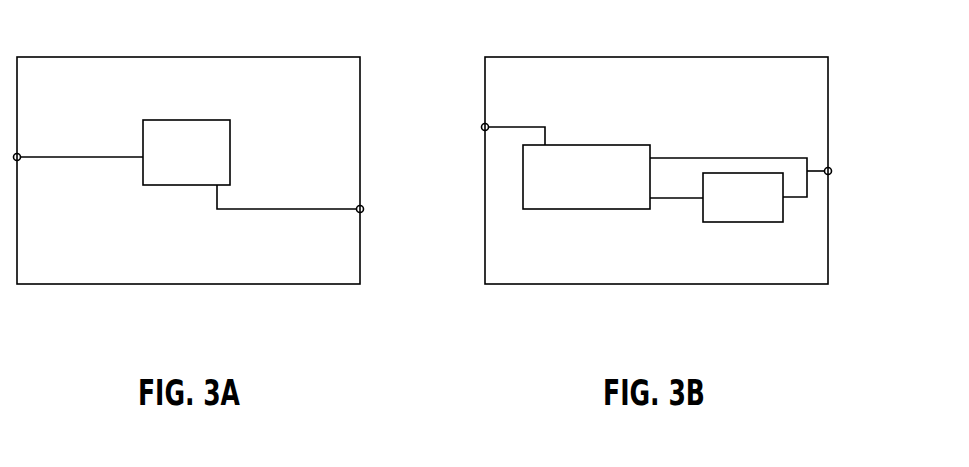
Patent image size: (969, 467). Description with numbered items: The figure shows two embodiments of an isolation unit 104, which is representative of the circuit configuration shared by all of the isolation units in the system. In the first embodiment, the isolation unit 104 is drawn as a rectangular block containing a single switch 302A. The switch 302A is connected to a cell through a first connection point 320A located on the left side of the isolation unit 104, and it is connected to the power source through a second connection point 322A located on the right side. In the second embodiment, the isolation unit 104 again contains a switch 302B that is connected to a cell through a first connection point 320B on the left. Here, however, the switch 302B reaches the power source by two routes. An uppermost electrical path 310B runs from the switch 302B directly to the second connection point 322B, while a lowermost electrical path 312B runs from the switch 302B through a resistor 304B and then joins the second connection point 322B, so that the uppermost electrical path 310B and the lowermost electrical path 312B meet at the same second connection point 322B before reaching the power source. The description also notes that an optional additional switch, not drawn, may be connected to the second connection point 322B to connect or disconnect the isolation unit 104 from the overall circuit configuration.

In FIG. 3A, the isolation unit 104 is at (327, 57).
In FIG. 3B, the isolation unit 104 is at (797, 57).
In FIG. 3A, the switch 302A is at (188, 118).
In FIG. 3A, the first connection point 320A is at (23, 158).
In FIG. 3A, the second connection point 322A is at (361, 204).
In FIG. 3B, the switch 302B is at (598, 145).
In FIG. 3B, the resistor 304B is at (757, 223).
In FIG. 3B, the uppermost electrical path 310B is at (717, 157).
In FIG. 3B, the lowermost electrical path 312B is at (673, 198).
In FIG. 3B, the first connection point 320B is at (483, 124).
In FIG. 3B, the second connection point 322B is at (830, 167).